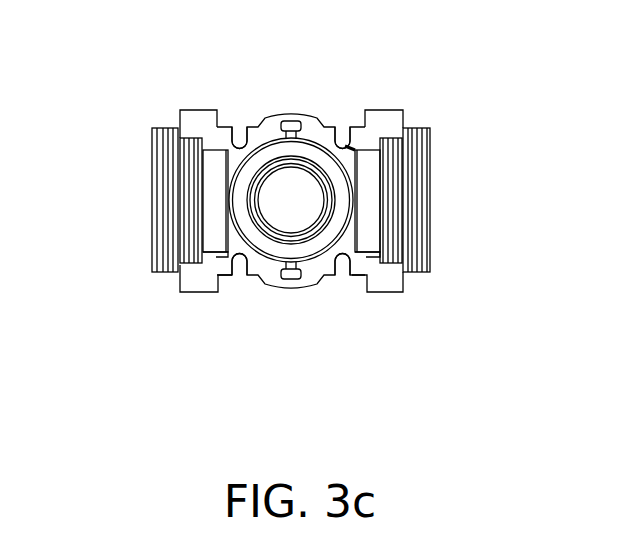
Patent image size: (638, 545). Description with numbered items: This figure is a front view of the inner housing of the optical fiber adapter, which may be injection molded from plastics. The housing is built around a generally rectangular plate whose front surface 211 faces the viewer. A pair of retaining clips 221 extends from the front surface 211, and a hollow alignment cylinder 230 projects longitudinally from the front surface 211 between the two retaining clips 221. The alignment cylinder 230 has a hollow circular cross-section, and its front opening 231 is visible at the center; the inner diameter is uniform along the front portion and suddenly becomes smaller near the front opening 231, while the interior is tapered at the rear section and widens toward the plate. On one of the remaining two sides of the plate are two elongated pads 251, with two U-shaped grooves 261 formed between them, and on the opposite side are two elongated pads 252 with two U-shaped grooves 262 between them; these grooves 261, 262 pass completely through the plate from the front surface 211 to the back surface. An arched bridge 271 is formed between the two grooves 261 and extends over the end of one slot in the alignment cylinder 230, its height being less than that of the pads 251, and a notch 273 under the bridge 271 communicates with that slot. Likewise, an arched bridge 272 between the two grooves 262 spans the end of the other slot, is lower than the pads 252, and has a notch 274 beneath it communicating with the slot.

The front surface 211 is at (365, 263).
The retaining clips 221 is at (217, 181).
The alignment cylinder 230 is at (248, 228).
The front opening 231 is at (278, 201).
The elongated pads 251 is at (200, 110).
The elongated pads 252 is at (203, 283).
The grooves 261 is at (242, 137).
The grooves 262 is at (242, 268).
The arched bridge 271 is at (296, 108).
The arched bridge 272 is at (289, 282).
The notch 273 is at (357, 150).
The notch 274 is at (258, 265).